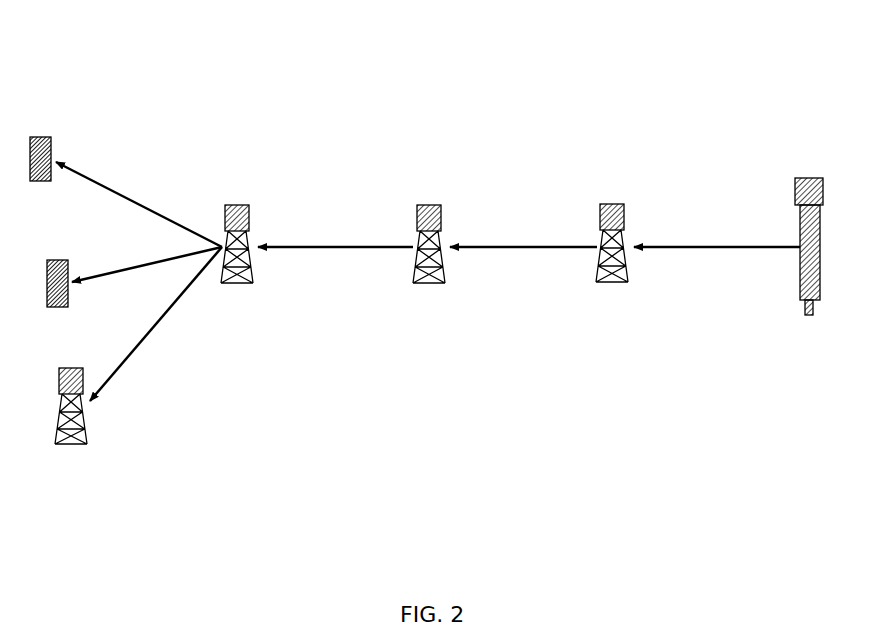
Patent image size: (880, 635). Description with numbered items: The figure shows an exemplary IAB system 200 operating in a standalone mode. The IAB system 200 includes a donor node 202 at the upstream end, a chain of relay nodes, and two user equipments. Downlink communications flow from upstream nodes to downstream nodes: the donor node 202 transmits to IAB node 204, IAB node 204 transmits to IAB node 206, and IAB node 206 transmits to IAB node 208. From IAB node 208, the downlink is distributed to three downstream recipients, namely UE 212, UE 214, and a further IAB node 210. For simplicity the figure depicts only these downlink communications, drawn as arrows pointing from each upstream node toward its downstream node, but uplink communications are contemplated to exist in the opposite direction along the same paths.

The IAB system 200 is at (767, 59).
The donor node 202 is at (807, 177).
The IAB node 204 is at (617, 204).
The IAB node 206 is at (437, 205).
The IAB node 208 is at (243, 206).
The IAB node 210 is at (68, 368).
The UE 212 is at (41, 140).
The UE 214 is at (58, 262).